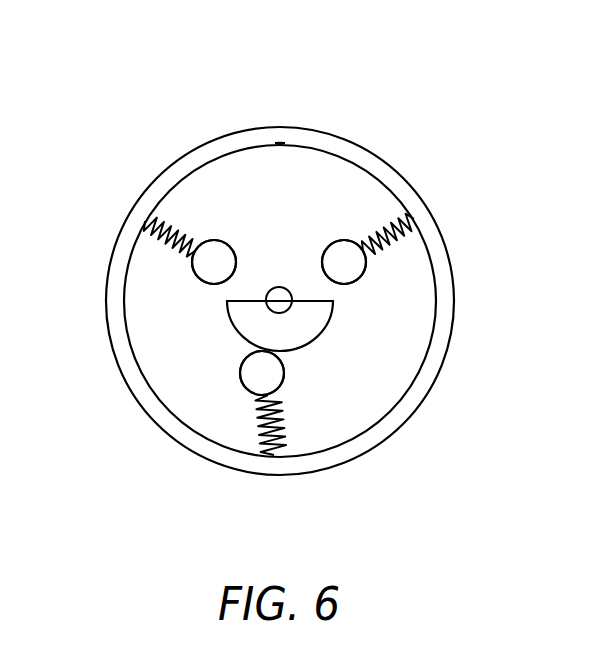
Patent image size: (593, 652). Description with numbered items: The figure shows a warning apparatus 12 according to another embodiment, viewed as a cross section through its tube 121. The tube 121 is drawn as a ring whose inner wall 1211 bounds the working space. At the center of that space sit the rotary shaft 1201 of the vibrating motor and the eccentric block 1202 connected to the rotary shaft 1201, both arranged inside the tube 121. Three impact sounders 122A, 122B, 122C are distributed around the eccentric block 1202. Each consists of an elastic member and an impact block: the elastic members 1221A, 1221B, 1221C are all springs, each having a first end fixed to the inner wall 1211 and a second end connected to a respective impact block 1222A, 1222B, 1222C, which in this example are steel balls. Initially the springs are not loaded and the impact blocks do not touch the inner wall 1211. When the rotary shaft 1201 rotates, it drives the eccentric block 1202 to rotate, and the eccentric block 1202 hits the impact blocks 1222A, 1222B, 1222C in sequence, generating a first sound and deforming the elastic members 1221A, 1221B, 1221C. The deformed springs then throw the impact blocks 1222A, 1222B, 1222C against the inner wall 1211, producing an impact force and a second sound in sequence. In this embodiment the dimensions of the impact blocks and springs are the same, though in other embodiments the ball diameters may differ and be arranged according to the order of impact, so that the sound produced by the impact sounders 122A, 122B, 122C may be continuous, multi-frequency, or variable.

The warning apparatus 12 is at (474, 92).
The tube 121 is at (202, 128).
The inner wall 1211 is at (252, 145).
The rotary shaft 1201 is at (287, 292).
The eccentric block 1202 is at (312, 320).
The impact sounder 122A is at (316, 425).
The impact sounder 122B is at (143, 262).
The impact sounder 122C is at (420, 262).
The elastic member 1221A is at (263, 433).
The elastic member 1221B is at (182, 232).
The elastic member 1221C is at (387, 220).
The impact block 1222A is at (240, 383).
The impact block 1222B is at (207, 266).
The impact block 1222C is at (352, 272).